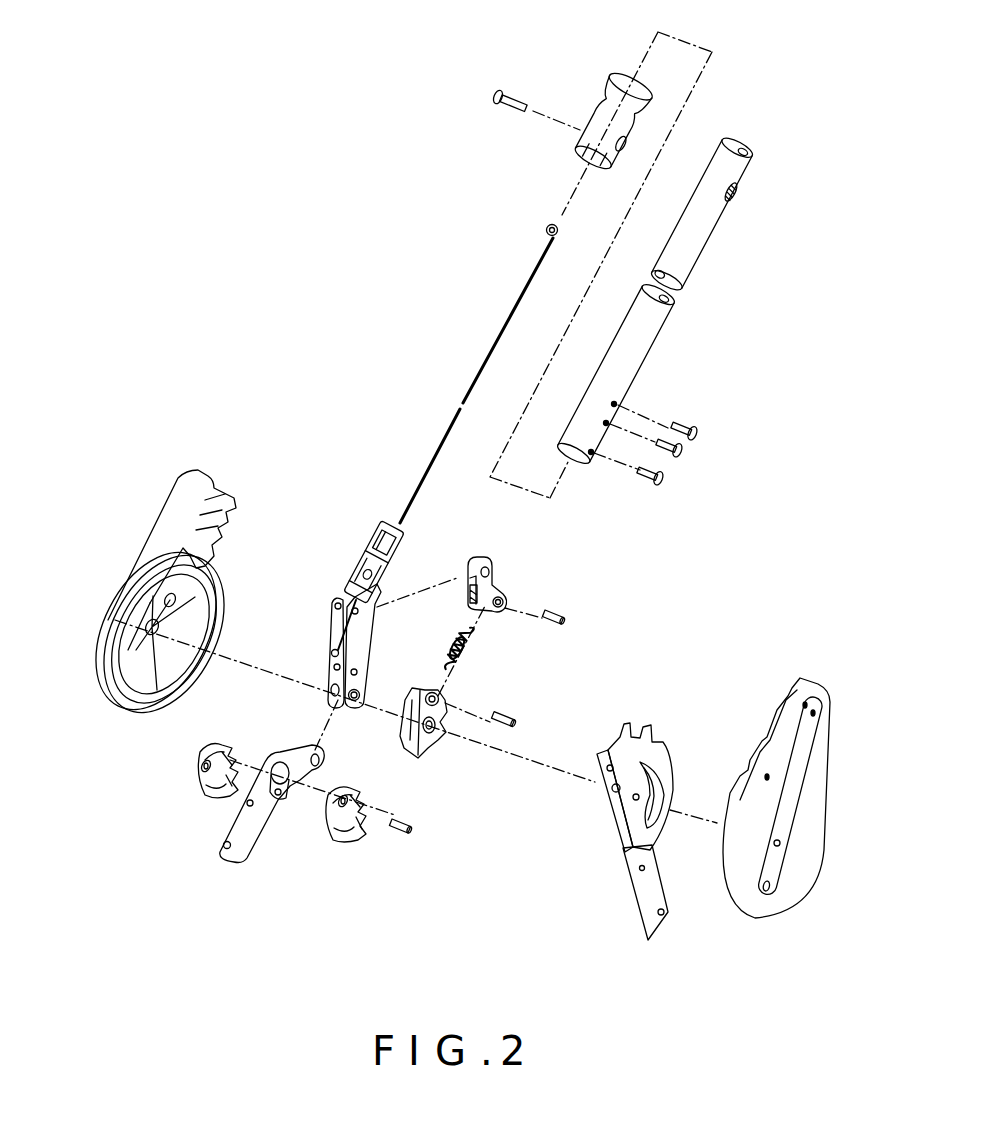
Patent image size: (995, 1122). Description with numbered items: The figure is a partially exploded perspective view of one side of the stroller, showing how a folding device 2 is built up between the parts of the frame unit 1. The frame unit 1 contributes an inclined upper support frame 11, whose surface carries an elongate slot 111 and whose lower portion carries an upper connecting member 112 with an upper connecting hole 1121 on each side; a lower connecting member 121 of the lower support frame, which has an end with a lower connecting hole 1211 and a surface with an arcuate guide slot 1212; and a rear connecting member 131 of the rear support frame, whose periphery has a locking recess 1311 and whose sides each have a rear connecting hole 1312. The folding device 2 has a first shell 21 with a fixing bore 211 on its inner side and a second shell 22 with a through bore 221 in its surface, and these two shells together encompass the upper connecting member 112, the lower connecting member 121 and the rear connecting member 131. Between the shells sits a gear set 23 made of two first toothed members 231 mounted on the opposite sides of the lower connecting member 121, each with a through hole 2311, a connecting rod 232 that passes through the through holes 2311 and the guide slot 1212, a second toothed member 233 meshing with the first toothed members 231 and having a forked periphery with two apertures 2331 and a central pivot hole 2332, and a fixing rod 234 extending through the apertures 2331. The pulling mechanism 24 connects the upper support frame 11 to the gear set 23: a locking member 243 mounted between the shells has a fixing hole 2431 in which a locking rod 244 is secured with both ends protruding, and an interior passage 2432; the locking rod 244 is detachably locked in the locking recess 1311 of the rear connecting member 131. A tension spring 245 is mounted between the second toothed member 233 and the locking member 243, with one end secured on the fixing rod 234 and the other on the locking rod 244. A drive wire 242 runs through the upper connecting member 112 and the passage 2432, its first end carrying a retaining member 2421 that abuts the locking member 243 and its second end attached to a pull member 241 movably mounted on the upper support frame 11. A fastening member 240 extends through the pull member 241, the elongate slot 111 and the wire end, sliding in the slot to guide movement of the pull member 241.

The frame unit 1 is at (700, 360).
The upper support frame 11 is at (685, 262).
The elongate slot 111 is at (736, 194).
The upper connecting member 112 is at (337, 596).
The upper connecting hole 1121 is at (360, 693).
The lower connecting member 121 is at (220, 840).
The lower connecting hole 1211 is at (314, 752).
The arcuate guide slot 1212 is at (276, 795).
The rear connecting member 131 is at (641, 912).
The locking recess 1311 is at (656, 734).
The rear connecting hole 1312 is at (622, 868).
The folding device 2 is at (297, 418).
The first shell 21 is at (178, 505).
The fixing bore 211 is at (150, 622).
The second shell 22 is at (793, 740).
The through bore 221 is at (779, 846).
The gear set 23 is at (375, 873).
The first toothed member 231 is at (200, 782).
The through hole 2311 is at (204, 760).
The connecting rod 232 is at (401, 833).
The second toothed member 233 is at (416, 758).
The aperture 2331 is at (440, 700).
The pivot hole 2332 is at (432, 742).
The fixing rod 234 is at (513, 719).
The pulling mechanism 24 is at (428, 188).
The fastening member 240 is at (505, 92).
The pull member 241 is at (597, 120).
The drive wire 242 is at (530, 280).
The retaining member 2421 is at (330, 653).
The locking member 243 is at (490, 560).
The fixing hole 2431 is at (505, 598).
The passage 2432 is at (468, 585).
The locking rod 244 is at (562, 615).
The tension spring 245 is at (463, 651).